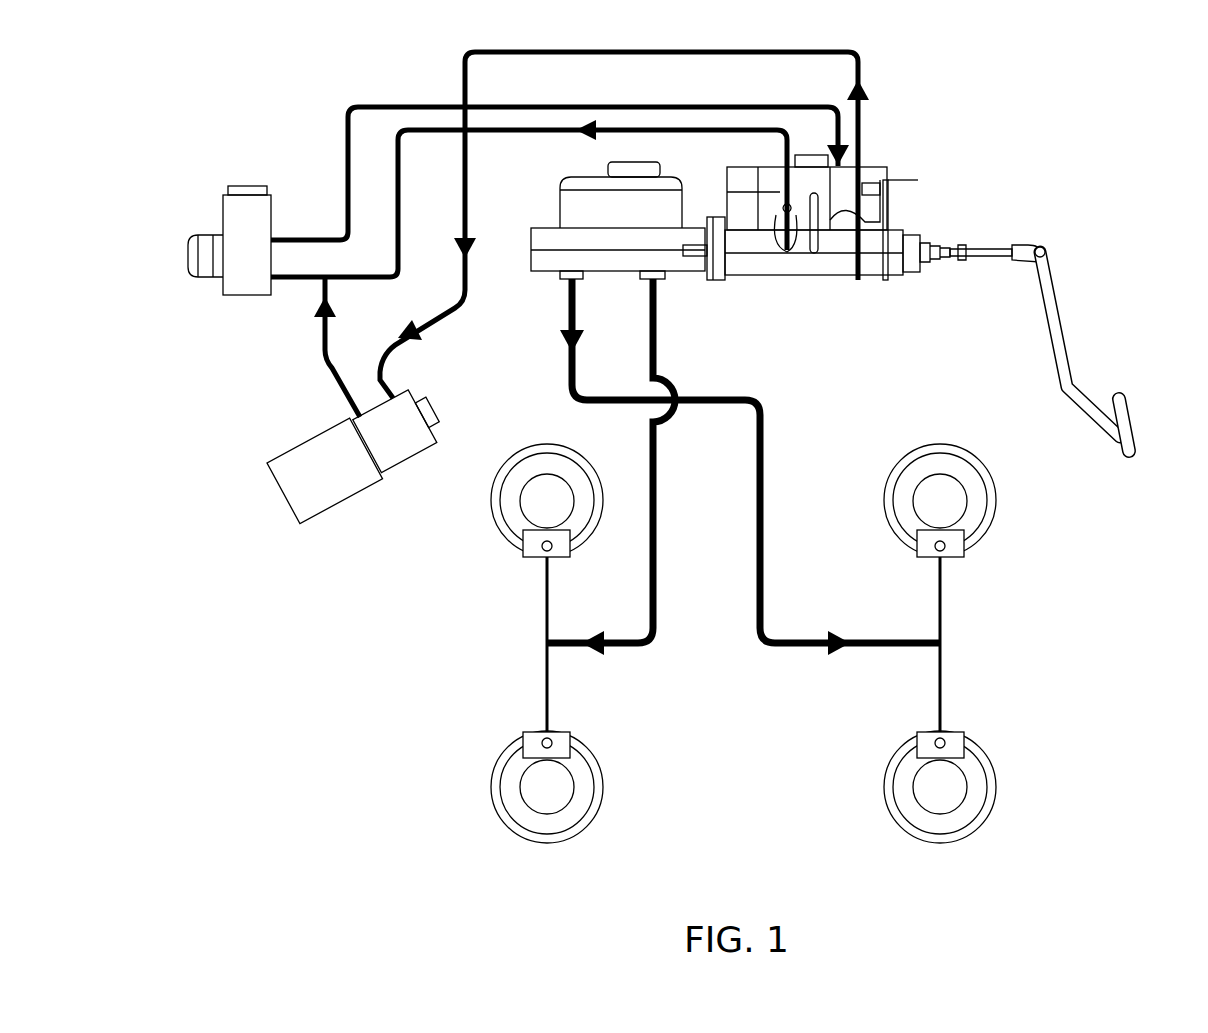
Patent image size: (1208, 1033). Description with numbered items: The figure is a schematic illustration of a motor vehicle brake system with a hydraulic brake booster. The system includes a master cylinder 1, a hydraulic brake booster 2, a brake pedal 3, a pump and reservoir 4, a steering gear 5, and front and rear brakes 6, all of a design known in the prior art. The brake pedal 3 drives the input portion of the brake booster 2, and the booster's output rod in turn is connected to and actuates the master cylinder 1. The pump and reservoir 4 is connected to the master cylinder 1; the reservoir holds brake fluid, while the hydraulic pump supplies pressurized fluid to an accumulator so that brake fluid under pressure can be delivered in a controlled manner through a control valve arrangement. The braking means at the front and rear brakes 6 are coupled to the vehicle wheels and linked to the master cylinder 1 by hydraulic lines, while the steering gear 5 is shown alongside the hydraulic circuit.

The master cylinder 1 is at (623, 273).
The hydraulic brake booster 2 is at (892, 212).
The brake pedal 3 is at (1060, 297).
The pump and reservoir 4 is at (242, 297).
The steering gear 5 is at (272, 483).
The front and rear brakes 6 is at (500, 533).